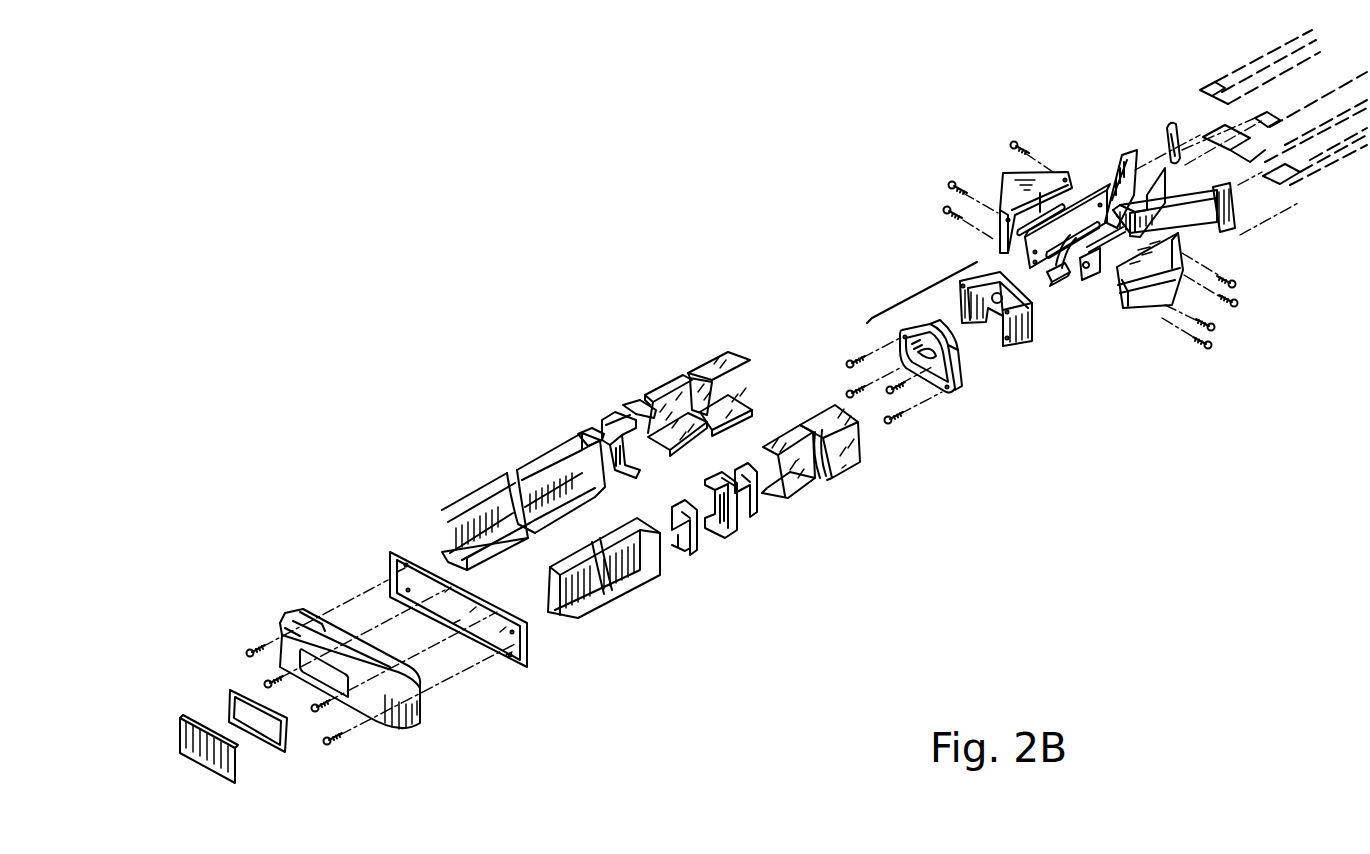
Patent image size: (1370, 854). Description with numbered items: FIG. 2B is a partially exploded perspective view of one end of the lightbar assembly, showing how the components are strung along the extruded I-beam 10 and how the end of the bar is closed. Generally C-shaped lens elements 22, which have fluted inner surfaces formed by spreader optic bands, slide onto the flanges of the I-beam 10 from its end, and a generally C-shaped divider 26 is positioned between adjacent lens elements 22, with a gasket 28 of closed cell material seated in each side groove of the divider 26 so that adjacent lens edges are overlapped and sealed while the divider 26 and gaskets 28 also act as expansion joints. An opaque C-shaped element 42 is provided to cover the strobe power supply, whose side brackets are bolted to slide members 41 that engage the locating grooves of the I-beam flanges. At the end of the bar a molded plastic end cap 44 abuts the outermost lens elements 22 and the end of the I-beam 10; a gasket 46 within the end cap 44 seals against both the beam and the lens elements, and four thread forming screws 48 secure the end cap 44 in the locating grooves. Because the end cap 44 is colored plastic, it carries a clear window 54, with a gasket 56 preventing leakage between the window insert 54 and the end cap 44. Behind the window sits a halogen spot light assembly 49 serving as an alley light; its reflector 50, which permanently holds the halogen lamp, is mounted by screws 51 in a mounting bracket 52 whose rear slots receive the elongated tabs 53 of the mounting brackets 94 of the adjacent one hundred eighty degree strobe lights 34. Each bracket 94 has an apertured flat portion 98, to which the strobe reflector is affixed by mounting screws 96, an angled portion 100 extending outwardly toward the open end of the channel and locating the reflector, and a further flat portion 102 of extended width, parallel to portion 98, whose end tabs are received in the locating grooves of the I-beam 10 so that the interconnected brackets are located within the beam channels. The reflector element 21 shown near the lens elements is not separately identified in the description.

The I-beam 10 is at (1309, 99).
The reflector 21 is at (858, 465).
The lens element 22 is at (632, 592).
The divider 26 is at (604, 412).
The gasket 28 is at (691, 556).
The 180 degree light 34 is at (1000, 177).
The slide member 41 is at (1170, 125).
The opaque C-shaped element 42 is at (718, 356).
The end cap 44 is at (428, 712).
The gasket 46 is at (388, 554).
The thread forming screw 48 is at (342, 738).
The halogen spot light assembly 49 is at (930, 284).
The reflector 50 is at (963, 386).
The screw 51 is at (848, 392).
The mounting bracket 52 is at (1018, 353).
The tab 53 is at (1043, 283).
The window 54 is at (238, 763).
The gasket 56 is at (232, 693).
The mounting bracket 94 is at (1087, 186).
The mounting screw 96 is at (1240, 284).
The flat portion 98 is at (1082, 186).
The angled portion 100 is at (1210, 231).
The flat portion 102 is at (1126, 157).